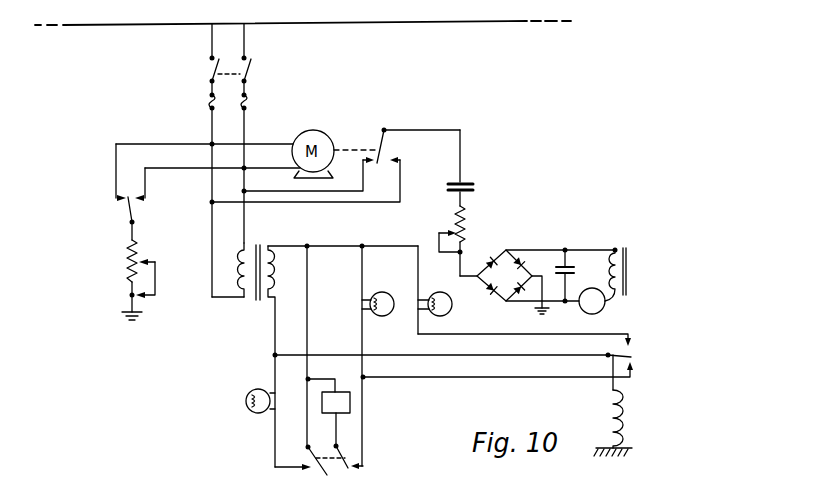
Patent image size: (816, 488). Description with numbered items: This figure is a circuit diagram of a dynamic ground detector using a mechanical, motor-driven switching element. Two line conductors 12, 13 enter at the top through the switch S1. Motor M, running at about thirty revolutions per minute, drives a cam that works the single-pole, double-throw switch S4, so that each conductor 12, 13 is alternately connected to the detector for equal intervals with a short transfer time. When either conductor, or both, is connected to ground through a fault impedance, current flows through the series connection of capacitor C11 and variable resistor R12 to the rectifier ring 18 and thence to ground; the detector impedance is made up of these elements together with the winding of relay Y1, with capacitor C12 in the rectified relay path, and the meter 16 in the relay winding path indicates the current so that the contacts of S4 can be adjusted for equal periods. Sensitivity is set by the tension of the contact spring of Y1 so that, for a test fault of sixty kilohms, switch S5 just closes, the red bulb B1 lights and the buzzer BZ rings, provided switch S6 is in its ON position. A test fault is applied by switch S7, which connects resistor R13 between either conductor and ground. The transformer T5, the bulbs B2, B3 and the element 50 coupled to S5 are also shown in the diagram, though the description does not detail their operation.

The conductor 12 is at (80, 0).
The conductor 13 is at (112, 25).
The milliammeter 16 is at (601, 311).
The rectifier ring 18 is at (499, 257).
The solenoid 50 is at (623, 404).
The main switch S1 is at (213, 83).
The switch S4 is at (336, 165).
The switch S5 is at (629, 368).
The switch S6 is at (314, 466).
The switch S7 is at (138, 188).
The capacitor C11 is at (476, 168).
The capacitor C12 is at (577, 276).
The variable resistor R12 is at (468, 241).
The resistor R13 is at (127, 271).
The transformer T5 is at (243, 289).
The red bulb B1 is at (382, 313).
The lamp B2 is at (442, 290).
The lamp B3 is at (260, 411).
The buzzer BZ is at (332, 409).
The relay Y1 is at (624, 275).